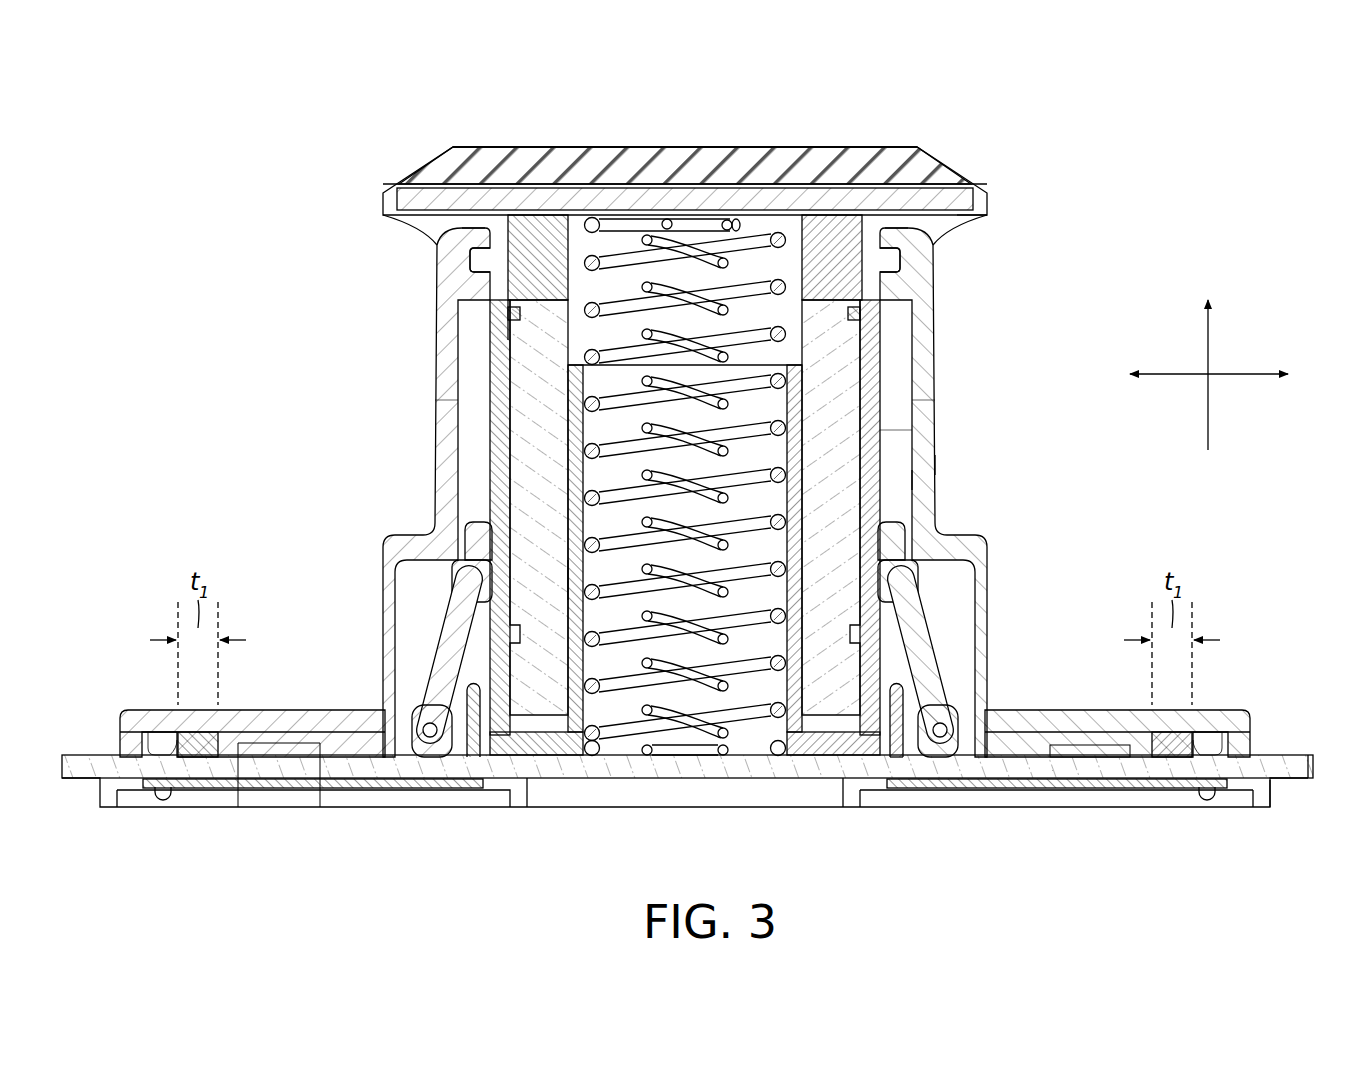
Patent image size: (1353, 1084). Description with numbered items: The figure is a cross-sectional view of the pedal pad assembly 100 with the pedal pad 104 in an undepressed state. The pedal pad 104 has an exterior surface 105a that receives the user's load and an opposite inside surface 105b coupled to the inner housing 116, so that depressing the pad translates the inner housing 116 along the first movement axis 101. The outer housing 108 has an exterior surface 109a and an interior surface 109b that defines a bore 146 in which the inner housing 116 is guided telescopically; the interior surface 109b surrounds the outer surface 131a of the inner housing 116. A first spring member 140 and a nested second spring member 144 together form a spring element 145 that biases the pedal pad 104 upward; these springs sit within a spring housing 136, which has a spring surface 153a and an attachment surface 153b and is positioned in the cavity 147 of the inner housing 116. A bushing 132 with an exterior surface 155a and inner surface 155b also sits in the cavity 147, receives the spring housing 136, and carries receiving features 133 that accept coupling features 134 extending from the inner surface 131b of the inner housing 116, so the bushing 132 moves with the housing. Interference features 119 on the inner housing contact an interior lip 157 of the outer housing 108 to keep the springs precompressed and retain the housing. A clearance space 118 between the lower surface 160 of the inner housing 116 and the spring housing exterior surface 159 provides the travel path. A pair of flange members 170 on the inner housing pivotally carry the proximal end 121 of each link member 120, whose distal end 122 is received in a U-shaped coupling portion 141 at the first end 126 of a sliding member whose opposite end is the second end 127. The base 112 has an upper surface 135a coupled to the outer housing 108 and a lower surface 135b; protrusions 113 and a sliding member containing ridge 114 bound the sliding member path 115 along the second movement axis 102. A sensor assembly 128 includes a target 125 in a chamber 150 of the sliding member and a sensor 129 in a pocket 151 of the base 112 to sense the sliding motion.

The pedal pad assembly 100 is at (1116, 178).
The first movement axis 101 is at (1210, 338).
The second movement axis 102 is at (1244, 378).
The pedal pad 104 is at (500, 147).
The exterior surface 105a is at (875, 140).
The inside surface 105b is at (978, 222).
The outer housing 108 is at (435, 350).
The exterior surface 109a is at (940, 463).
The interior surface 109b is at (885, 482).
The base 112 is at (1292, 755).
The protrusion 113 is at (455, 655).
The sliding member containing ridge 114 is at (160, 748).
The sliding member path 115 is at (1110, 943).
The inner housing 116 is at (470, 413).
The clearance space 118 is at (857, 742).
The interference feature 119 is at (468, 262).
The link member 120 is at (940, 640).
The proximal end 121 is at (912, 580).
The distal end 122 is at (962, 732).
The target 125 is at (290, 743).
The first end 126 is at (408, 732).
The second end 127 is at (218, 733).
The sensor assembly 128 is at (487, 903).
The sensor 129 is at (352, 790).
The outer surface 131a is at (482, 373).
The inner surface 131b is at (522, 488).
The bushing 132 is at (895, 432).
The receiving feature 133 is at (517, 312).
The coupling feature 134 is at (880, 283).
The upper surface 135a is at (1306, 742).
The lower surface 135b is at (1264, 813).
The spring housing 136 is at (815, 458).
The first spring member 140 is at (772, 508).
The coupling portion 141 is at (418, 757).
The second spring member 144 is at (755, 540).
The spring element 145 is at (625, 755).
The bore 146 is at (910, 300).
The cavity 147 is at (858, 300).
The chamber 150 is at (238, 807).
The pocket 151 is at (313, 943).
The spring surface 153a is at (600, 563).
The attachment surface 153b is at (563, 563).
The exterior surface 155a is at (506, 322).
The inner surface 155b is at (795, 318).
The interior lip 157 is at (460, 237).
The spring housing exterior surface 159 is at (540, 768).
The lower surface 160 is at (870, 737).
The flange members 170 is at (458, 578).